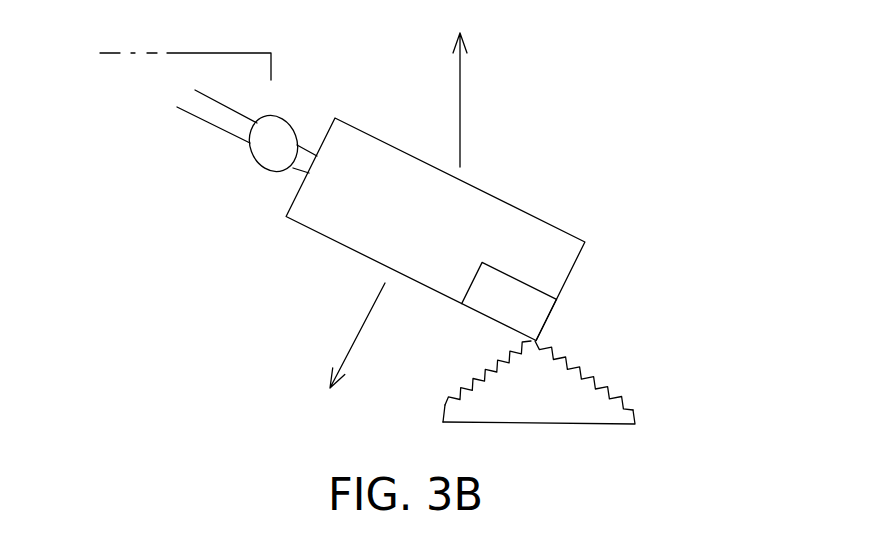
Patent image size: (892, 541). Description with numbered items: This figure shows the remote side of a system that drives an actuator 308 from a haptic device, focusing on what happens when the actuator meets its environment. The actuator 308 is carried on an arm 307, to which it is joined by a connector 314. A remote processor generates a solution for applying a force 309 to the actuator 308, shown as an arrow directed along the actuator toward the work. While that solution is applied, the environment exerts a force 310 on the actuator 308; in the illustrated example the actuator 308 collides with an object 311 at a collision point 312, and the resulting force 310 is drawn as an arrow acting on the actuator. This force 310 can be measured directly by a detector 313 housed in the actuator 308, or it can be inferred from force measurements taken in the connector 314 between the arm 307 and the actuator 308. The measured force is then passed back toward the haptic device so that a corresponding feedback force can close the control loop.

The arm 307 is at (213, 53).
The actuator 308 is at (493, 196).
The force 309 is at (358, 335).
The force 310 is at (462, 95).
The object 311 is at (603, 363).
The collision point 312 is at (540, 330).
The detector 313 is at (535, 283).
The connector 314 is at (304, 152).